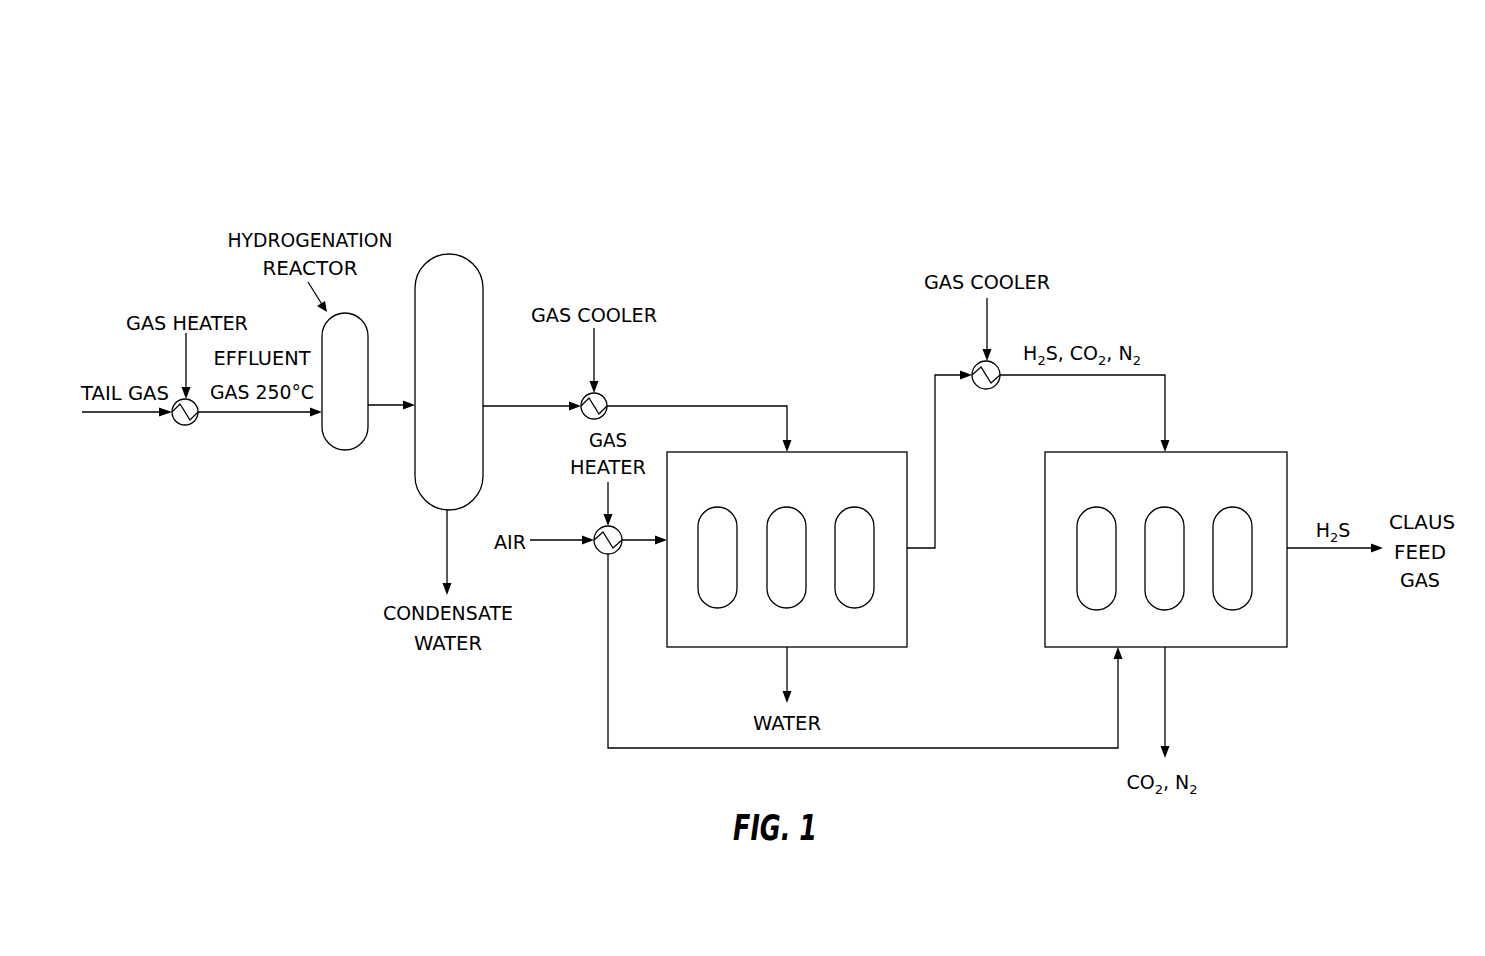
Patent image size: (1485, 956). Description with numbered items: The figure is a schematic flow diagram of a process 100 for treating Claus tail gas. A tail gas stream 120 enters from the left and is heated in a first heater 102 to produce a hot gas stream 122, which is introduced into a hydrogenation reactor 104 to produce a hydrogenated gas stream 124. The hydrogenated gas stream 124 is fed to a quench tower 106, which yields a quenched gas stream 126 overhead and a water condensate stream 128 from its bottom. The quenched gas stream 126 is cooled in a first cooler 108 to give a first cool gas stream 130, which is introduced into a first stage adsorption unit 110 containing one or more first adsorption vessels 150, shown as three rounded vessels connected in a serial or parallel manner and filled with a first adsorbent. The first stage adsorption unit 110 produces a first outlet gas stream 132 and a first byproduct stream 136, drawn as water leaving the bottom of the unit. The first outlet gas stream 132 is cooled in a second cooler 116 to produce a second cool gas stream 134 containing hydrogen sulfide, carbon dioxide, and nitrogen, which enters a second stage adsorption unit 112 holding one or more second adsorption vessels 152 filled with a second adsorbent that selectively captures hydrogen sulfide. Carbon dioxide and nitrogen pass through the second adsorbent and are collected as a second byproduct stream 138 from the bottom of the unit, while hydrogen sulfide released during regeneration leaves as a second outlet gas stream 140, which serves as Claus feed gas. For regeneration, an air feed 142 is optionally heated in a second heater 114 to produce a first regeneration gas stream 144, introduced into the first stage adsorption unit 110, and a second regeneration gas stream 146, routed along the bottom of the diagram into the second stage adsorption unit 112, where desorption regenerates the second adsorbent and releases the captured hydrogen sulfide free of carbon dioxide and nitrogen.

The process 100 is at (1226, 198).
The first heater 102 is at (183, 425).
The hydrogenation reactor 104 is at (345, 450).
The quench tower 106 is at (447, 252).
The first cooler 108 is at (585, 416).
The first stage adsorption unit 110 is at (848, 452).
The second stage adsorption unit 112 is at (1230, 452).
The second heater 114 is at (598, 556).
The second cooler 116 is at (987, 389).
The tail gas stream 120 is at (127, 413).
The hot gas stream 122 is at (261, 413).
The hydrogenated gas stream 124 is at (378, 405).
The quenched gas stream 126 is at (533, 404).
The water condensate stream 128 is at (447, 548).
The first cool gas stream 130 is at (697, 404).
The first outlet gas stream 132 is at (935, 462).
The second cool gas stream 134 is at (1078, 376).
The first byproduct stream 136 is at (787, 670).
The second byproduct stream 138 is at (1165, 725).
The second outlet gas stream 140 is at (1333, 550).
The air feed 142 is at (562, 540).
The first regeneration gas stream 144 is at (643, 546).
The second regeneration gas stream 146 is at (608, 650).
The first adsorption vessels 150 is at (786, 609).
The second adsorption vessels 152 is at (1164, 611).